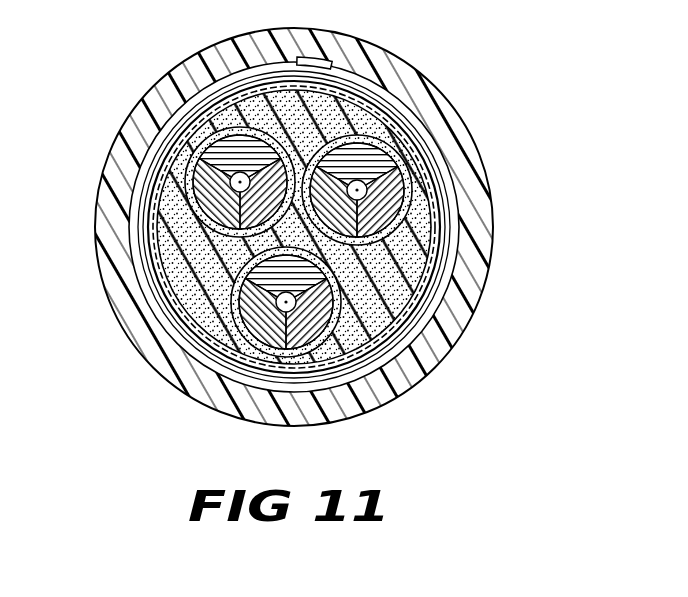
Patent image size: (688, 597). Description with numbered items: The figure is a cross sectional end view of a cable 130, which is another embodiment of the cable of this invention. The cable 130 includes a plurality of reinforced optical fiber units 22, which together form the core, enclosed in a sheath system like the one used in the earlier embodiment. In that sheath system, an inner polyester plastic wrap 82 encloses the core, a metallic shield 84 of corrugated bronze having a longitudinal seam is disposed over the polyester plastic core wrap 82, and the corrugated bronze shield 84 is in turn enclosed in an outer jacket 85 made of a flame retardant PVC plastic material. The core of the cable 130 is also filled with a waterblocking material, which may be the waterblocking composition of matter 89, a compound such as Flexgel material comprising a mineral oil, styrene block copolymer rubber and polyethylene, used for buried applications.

The cable 130 is at (547, 182).
The outer jacket 85 is at (103, 240).
The inner polyester plastic wrap 82 is at (418, 143).
The waterblocking composition of matter 89 is at (367, 101).
The metallic shield 84 is at (321, 63).
The reinforced optical fiber unit 22 is at (210, 297).